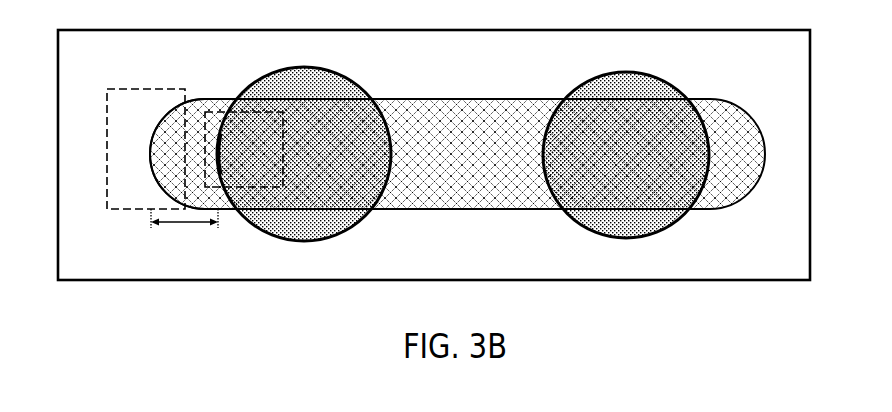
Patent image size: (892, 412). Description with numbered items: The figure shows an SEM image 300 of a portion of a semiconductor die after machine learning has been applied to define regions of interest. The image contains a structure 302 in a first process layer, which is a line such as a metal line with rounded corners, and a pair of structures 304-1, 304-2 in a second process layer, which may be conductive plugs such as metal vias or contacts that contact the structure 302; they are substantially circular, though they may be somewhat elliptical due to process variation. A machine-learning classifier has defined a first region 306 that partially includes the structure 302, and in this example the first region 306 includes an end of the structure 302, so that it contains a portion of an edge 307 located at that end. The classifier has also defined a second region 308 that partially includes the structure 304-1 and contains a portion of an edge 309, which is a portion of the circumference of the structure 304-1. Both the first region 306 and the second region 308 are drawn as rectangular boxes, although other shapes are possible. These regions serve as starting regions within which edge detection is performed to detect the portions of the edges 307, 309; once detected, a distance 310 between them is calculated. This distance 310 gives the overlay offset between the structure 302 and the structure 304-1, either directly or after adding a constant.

The SEM image 300 is at (802, 60).
The structure 302 is at (443, 161).
The structure 304-1 is at (314, 162).
The structure 304-2 is at (606, 162).
The first region 306 is at (122, 89).
The edge 307 is at (150, 153).
The second region 308 is at (217, 110).
The edge 309 is at (222, 156).
The distance 310 is at (186, 225).